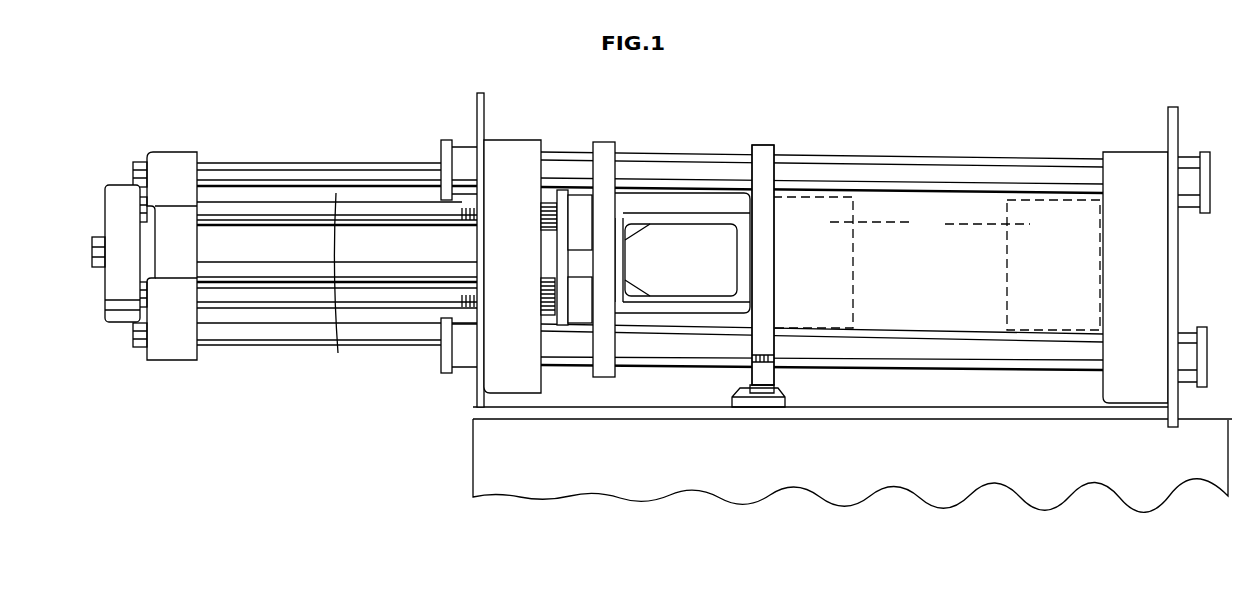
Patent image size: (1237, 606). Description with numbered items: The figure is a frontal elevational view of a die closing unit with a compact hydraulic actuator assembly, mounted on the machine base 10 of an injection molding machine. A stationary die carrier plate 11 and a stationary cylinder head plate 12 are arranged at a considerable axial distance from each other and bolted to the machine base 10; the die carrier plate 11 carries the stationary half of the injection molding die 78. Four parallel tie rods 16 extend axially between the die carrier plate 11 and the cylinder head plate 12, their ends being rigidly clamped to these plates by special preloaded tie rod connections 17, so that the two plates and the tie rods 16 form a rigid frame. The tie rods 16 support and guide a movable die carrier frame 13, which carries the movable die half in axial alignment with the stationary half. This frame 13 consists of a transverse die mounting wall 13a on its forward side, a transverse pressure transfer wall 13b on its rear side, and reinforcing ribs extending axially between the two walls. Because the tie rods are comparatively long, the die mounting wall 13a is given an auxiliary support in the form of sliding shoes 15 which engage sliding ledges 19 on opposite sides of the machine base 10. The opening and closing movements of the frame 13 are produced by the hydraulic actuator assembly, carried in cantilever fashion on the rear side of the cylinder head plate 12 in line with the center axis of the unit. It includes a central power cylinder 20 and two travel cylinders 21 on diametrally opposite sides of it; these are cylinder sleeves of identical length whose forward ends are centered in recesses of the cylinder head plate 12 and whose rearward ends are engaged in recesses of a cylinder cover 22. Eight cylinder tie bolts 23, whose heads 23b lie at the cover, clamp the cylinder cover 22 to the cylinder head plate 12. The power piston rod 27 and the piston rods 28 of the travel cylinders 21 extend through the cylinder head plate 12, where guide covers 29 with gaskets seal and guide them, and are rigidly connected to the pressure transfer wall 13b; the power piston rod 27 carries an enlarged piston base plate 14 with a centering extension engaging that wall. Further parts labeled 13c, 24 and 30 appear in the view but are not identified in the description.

The machine base 10 is at (835, 472).
The stationary die carrier plate 11 is at (1135, 162).
The stationary cylinder head plate 12 is at (504, 139).
The movable die carrier frame 13 is at (762, 143).
The die mounting wall 13a is at (763, 257).
The pressure transfer wall 13b is at (602, 163).
The connecting frame of movable die carrier 13c is at (740, 222).
The piston base plate 14 is at (579, 310).
The sliding shoes 15 is at (762, 405).
The tie rods 16 is at (917, 152).
The tie rod connections 17 is at (463, 158).
The sliding ledges 19 is at (935, 419).
The power cylinder 20 is at (364, 316).
The travel cylinders 21 is at (262, 260).
The cylinder cover 22 is at (182, 338).
The cylinder tie bolts 23 is at (231, 208).
The heads of the tie bolts 23b is at (141, 330).
The housing with bolt 24 is at (97, 236).
The power piston rod 27 is at (567, 218).
The piston rods of the travel cylinders 28 is at (583, 255).
The guide covers 29 is at (540, 305).
The upper seal bracket 30 is at (540, 226).
The injection molding die 78 is at (936, 263).